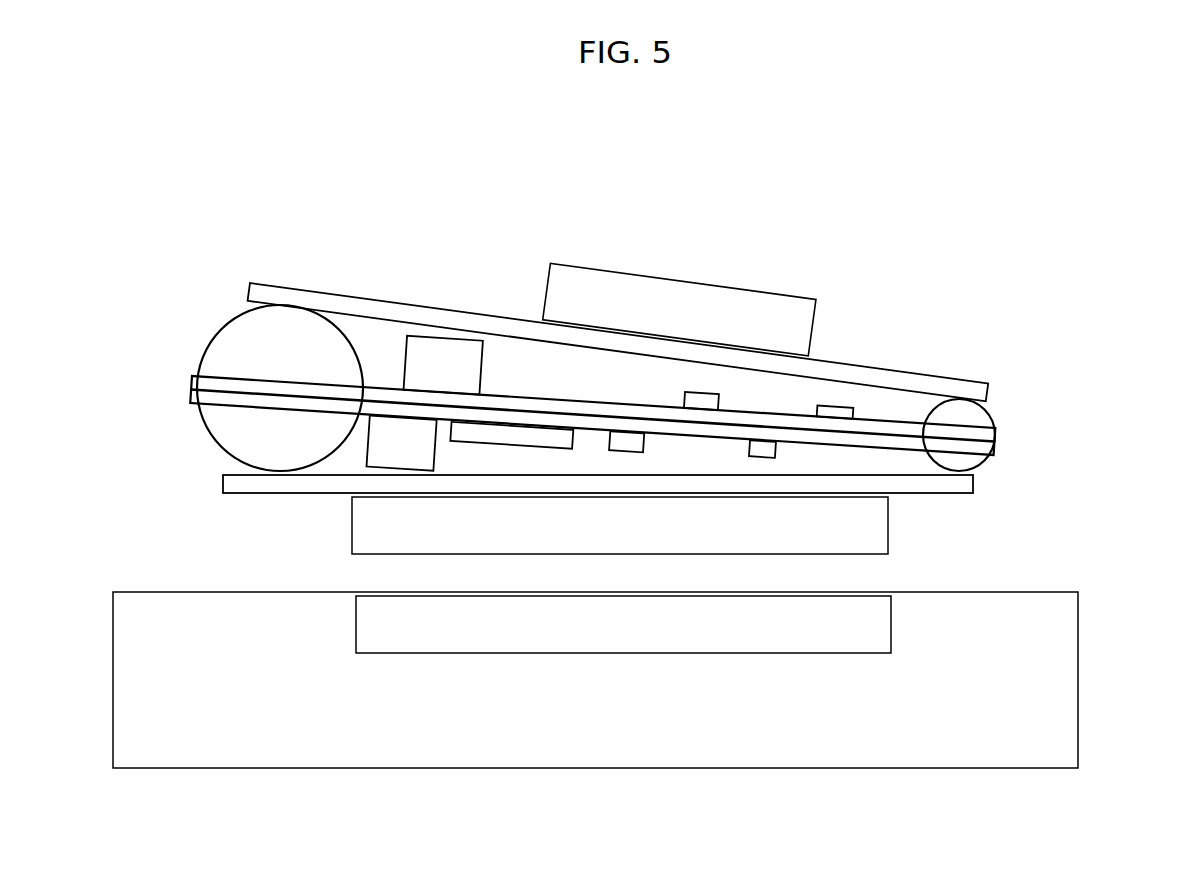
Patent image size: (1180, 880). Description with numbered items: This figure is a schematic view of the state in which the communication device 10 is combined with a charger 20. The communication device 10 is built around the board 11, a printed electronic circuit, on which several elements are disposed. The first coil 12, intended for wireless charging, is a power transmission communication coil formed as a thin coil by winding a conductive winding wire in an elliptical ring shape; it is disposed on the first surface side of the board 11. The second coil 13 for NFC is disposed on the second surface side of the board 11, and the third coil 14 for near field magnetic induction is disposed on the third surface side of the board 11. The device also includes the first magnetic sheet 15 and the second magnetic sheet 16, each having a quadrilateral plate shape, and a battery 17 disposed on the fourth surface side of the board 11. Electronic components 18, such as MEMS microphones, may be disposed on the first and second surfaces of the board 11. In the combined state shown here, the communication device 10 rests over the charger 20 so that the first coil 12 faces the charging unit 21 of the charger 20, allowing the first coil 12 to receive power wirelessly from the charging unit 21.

The communication device 10 is at (315, 237).
The board 11 is at (575, 408).
The first coil 12 is at (775, 520).
The second coil 13 is at (757, 323).
The third coil 14 is at (973, 420).
The first magnetic sheet 15 is at (290, 485).
The second magnetic sheet 16 is at (322, 298).
The battery 17 is at (280, 352).
The electronic components 18 is at (457, 367).
The charger 20 is at (352, 710).
The charging unit 21 is at (797, 622).